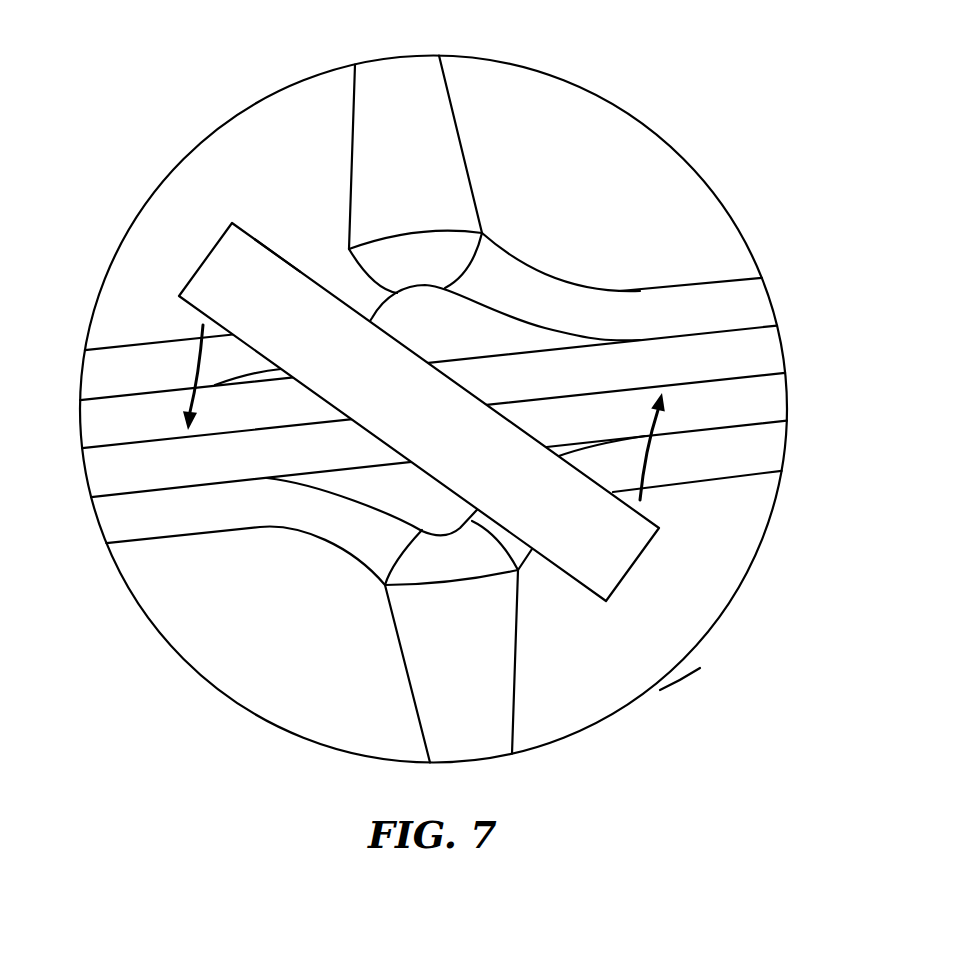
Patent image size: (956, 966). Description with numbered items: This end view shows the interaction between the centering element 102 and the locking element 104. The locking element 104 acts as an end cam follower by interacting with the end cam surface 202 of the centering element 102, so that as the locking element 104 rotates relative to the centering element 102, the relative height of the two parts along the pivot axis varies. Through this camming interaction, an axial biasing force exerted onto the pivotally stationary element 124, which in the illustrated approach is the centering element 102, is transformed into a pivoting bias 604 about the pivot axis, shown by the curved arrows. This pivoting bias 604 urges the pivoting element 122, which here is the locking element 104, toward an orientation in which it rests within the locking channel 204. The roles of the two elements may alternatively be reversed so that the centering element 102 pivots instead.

The centering element 102 is at (213, 688).
The locking element 104 is at (205, 257).
The pivoting element 122 is at (282, 226).
The pivotally stationary element 124 is at (698, 691).
The end cam surface 202 is at (633, 165).
The locking channel 204 is at (760, 351).
The pivoting bias 604 is at (185, 368).